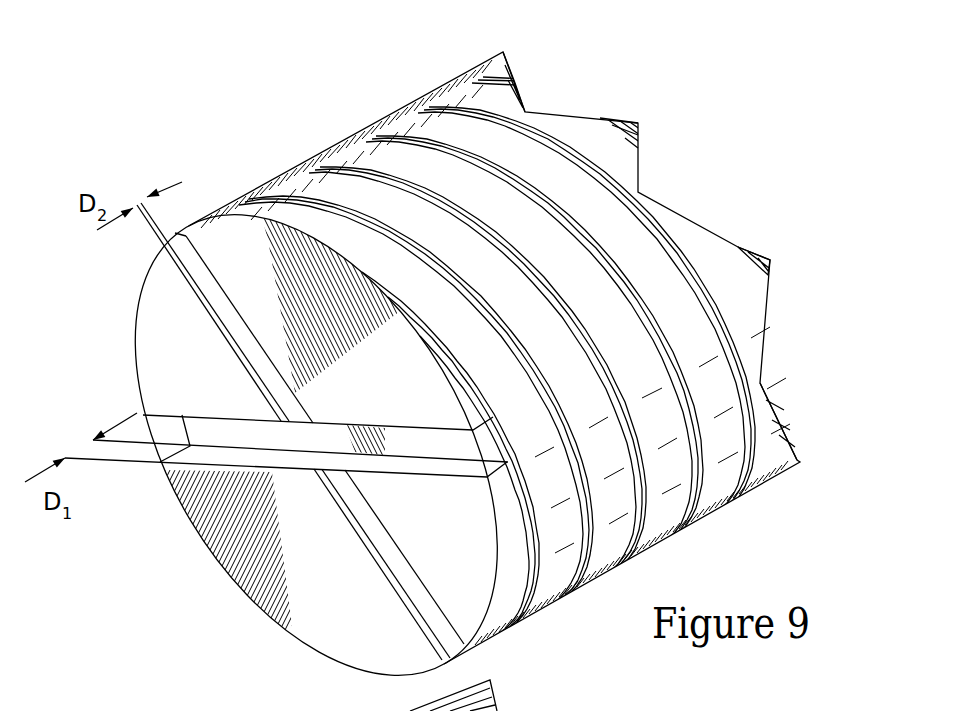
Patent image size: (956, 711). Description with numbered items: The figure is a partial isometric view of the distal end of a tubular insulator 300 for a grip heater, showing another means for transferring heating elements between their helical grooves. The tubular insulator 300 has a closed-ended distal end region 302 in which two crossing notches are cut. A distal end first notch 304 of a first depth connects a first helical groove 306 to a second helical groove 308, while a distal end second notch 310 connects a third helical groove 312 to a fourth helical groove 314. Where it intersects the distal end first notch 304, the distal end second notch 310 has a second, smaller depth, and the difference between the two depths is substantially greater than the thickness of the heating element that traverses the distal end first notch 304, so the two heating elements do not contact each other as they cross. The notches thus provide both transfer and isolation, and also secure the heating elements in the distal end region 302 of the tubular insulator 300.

The tubular insulator 300 is at (235, 150).
The distal end region 302 is at (227, 585).
The distal end first notch 304 is at (203, 432).
The first helical groove 306 is at (528, 608).
The second helical groove 308 is at (642, 513).
The distal end second notch 310 is at (405, 592).
The third helical groove 312 is at (317, 205).
The fourth helical groove 314 is at (397, 140).